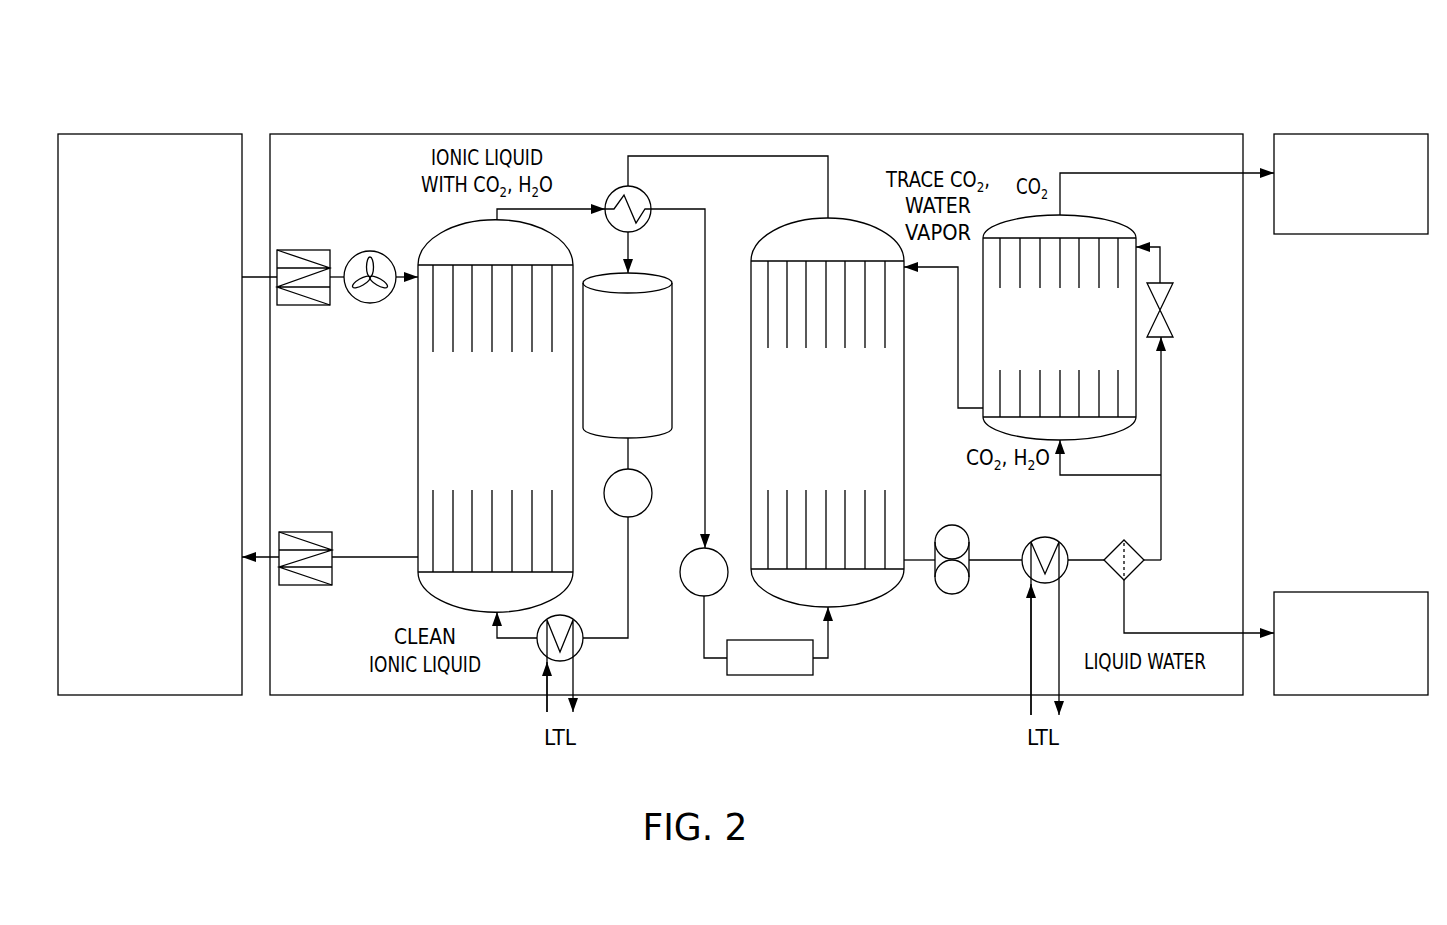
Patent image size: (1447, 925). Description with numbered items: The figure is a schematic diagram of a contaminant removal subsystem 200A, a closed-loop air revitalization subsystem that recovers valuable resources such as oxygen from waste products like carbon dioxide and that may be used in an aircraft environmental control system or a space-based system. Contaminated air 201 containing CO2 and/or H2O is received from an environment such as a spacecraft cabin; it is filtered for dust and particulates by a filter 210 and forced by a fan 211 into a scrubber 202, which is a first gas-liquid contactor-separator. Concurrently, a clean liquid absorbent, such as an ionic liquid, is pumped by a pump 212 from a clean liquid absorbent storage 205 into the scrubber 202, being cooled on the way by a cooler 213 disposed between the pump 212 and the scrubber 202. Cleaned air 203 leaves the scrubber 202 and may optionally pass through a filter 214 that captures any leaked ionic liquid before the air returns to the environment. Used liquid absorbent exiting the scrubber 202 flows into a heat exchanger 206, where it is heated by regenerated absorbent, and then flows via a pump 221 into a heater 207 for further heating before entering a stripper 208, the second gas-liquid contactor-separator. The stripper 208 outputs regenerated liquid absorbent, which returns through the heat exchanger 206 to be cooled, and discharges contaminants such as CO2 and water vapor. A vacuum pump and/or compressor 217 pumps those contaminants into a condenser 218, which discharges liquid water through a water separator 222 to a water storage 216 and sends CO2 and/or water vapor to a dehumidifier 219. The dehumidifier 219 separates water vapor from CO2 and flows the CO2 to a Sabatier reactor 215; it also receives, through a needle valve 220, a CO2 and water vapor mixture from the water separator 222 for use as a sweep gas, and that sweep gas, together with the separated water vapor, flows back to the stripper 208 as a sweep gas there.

The contaminant removal subsystem 200A is at (286, 97).
The contaminated air 201 is at (117, 522).
The scrubber 202 is at (418, 394).
The cleaned air 203 is at (365, 563).
The clean liquid absorbent storage 205 is at (660, 275).
The heat exchanger 206 is at (614, 187).
The heater 207 is at (792, 677).
The stripper 208 is at (846, 216).
The filter 210 is at (298, 250).
The fan 211 is at (364, 251).
The pump 212 is at (623, 519).
The cooler 213 is at (543, 661).
The filter 214 is at (295, 531).
The Sabatier reactor 215 is at (1388, 133).
The water storage 216 is at (1360, 591).
The vacuum pump and/or compressor 217 is at (959, 594).
The condenser 218 is at (1024, 543).
The dehumidifier 219 is at (1123, 405).
The needle valve 220 is at (1173, 298).
The pump 221 is at (686, 591).
The water separator 222 is at (1110, 548).